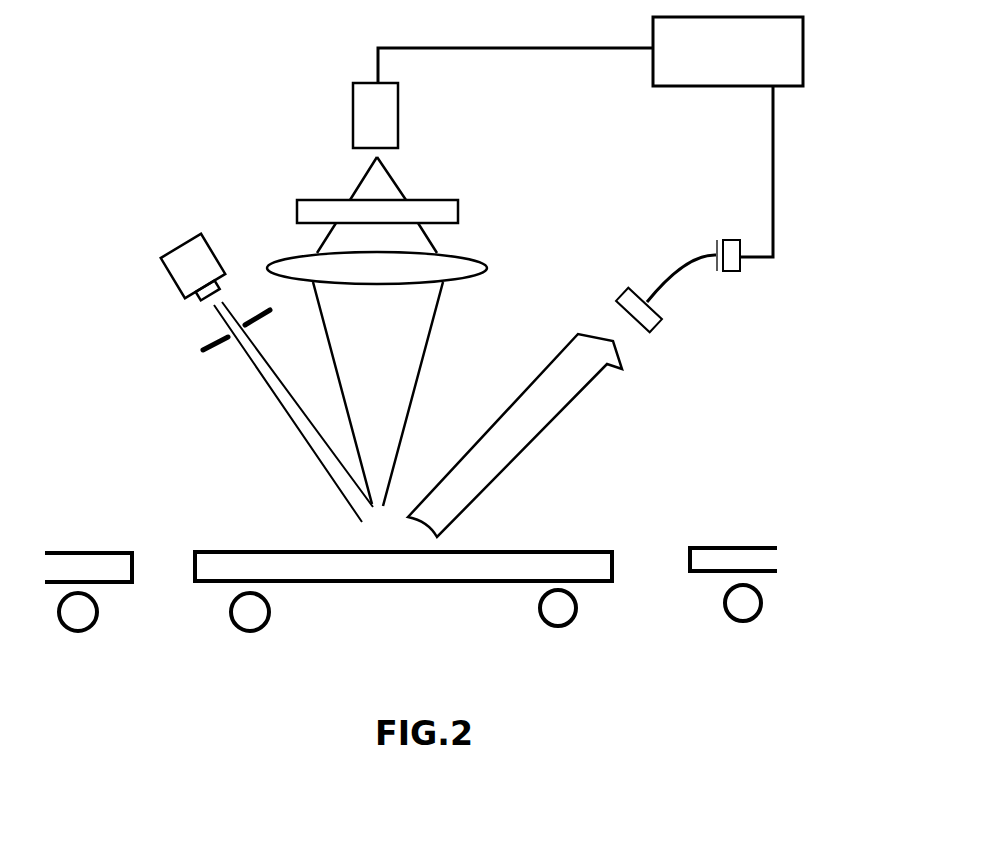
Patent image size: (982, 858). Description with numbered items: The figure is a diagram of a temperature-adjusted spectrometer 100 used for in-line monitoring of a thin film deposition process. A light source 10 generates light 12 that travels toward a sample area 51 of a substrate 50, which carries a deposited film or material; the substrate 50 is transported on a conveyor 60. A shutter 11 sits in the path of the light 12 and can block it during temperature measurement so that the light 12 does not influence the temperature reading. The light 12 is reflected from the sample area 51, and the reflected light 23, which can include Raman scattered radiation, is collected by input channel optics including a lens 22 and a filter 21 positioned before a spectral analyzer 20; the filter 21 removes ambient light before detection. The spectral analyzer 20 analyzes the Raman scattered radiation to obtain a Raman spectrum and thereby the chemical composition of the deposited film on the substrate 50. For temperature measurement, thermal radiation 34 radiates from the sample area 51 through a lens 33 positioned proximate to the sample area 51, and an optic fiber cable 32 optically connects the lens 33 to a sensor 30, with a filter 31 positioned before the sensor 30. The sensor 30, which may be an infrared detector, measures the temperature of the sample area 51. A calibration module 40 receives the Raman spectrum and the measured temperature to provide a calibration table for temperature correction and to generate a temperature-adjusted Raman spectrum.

The temperature-adjusted spectrometer 100 is at (186, 140).
The light source 10 is at (170, 268).
The shutter 11 is at (218, 333).
The light 12 is at (271, 385).
The spectral analyzer 20 is at (390, 124).
The filter 21 is at (458, 210).
The lens 22 is at (487, 265).
The reflected light 23 is at (413, 345).
The sensor 30 is at (747, 280).
The filter 31 is at (723, 277).
The optic fiber cable 32 is at (668, 285).
The lens 33 is at (623, 300).
The thermal radiation 34 is at (547, 415).
The calibration module 40 is at (797, 68).
The substrate 50 is at (628, 535).
The sample area 51 is at (351, 535).
The conveyor 60 is at (292, 622).